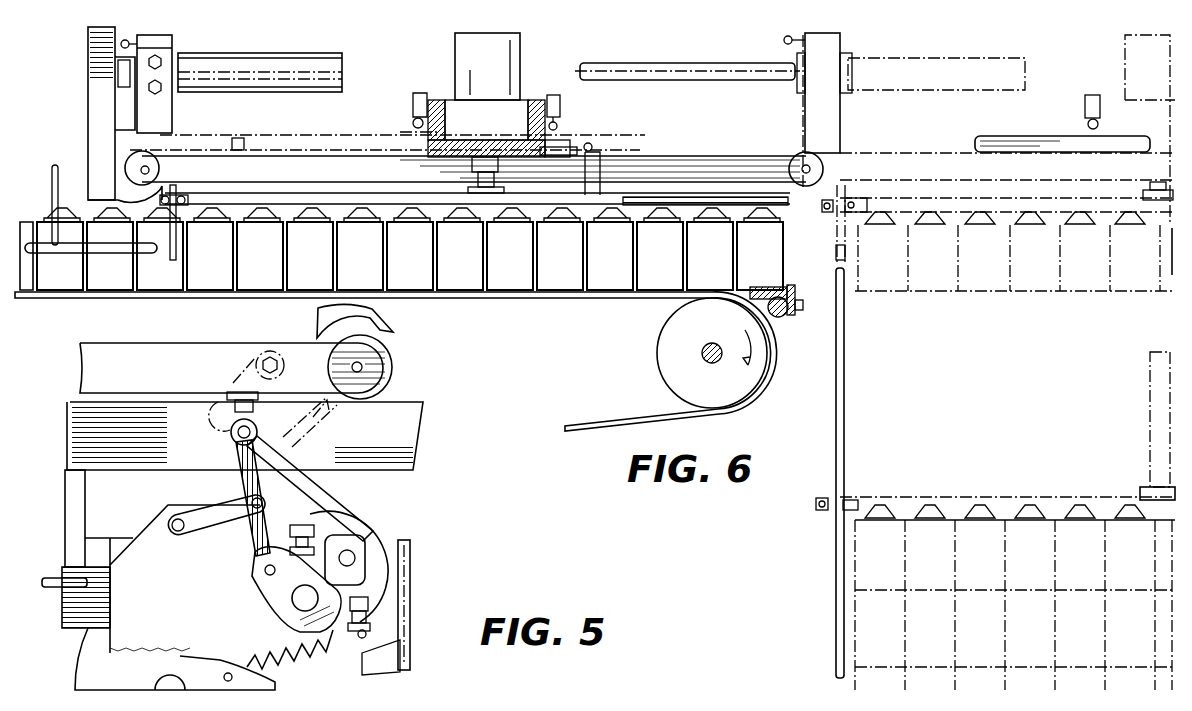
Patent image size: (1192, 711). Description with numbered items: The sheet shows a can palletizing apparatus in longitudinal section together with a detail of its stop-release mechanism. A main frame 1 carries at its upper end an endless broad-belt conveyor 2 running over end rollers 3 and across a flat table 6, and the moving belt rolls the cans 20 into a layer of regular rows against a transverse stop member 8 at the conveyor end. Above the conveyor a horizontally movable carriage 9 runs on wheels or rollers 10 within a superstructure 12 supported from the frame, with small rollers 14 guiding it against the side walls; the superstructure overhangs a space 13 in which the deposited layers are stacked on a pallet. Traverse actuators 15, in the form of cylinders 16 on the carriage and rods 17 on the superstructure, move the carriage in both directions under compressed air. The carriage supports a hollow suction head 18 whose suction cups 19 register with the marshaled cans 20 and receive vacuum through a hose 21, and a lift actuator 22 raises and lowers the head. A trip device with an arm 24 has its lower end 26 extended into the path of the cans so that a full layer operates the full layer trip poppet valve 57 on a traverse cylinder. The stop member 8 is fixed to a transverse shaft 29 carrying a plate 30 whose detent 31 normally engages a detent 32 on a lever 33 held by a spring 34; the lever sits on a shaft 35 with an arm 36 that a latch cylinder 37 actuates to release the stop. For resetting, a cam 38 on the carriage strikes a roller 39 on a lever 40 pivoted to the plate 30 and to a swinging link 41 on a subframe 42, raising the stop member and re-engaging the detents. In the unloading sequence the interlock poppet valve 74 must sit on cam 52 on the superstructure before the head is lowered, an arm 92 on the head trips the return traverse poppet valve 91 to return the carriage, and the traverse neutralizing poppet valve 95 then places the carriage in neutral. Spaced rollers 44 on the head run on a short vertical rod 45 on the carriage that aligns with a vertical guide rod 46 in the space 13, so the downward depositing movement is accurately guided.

In FIG. 5, the main frame 1 is at (76, 500).
In FIG. 6, the endless broad-belt conveyor 2 is at (640, 416).
In FIG. 5, the endless broad-belt conveyor 2 is at (50, 578).
In FIG. 6, the end rollers 3 is at (675, 327).
In FIG. 5, the end rollers 3 is at (93, 662).
In FIG. 5, the flat table 6 is at (62, 608).
In FIG. 6, the transverse stop member 8 is at (795, 312).
In FIG. 5, the transverse stop member 8 is at (411, 573).
In FIG. 6, the horizontally movable carriage 9 is at (360, 162).
In FIG. 5, the horizontally movable carriage 9 is at (170, 360).
In FIG. 6, the wheels or rollers 10 is at (135, 162).
In FIG. 5, the wheels or rollers 10 is at (386, 362).
In FIG. 6, the superstructure 12 is at (98, 100).
In FIG. 5, the superstructure 12 is at (95, 425).
In FIG. 6, the space 13 is at (1032, 409).
In FIG. 5, the small rollers 14 is at (230, 395).
In FIG. 6, the traverse actuators 15 is at (300, 58).
In FIG. 6, the cylinders 16 is at (260, 80).
In FIG. 6, the rods 17 is at (655, 75).
In FIG. 6, the hollow suction head 18 is at (686, 197).
In FIG. 6, the suction cups 19 is at (625, 218).
In FIG. 6, the cans 20 is at (512, 270).
In FIG. 6, the hose 21 is at (235, 147).
In FIG. 6, the actuator 22 is at (487, 48).
In FIG. 6, the arm 24 is at (52, 183).
In FIG. 6, the lower end 26 is at (103, 253).
In FIG. 6, the transverse shaft 29 is at (778, 318).
In FIG. 5, the transverse shaft 29 is at (298, 600).
In FIG. 5, the plate 30 is at (255, 587).
In FIG. 5, the detent 31 is at (366, 618).
In FIG. 5, the detent 32 is at (368, 601).
In FIG. 5, the lever 33 is at (366, 632).
In FIG. 5, the spring 34 is at (316, 652).
In FIG. 5, the shaft 35 is at (356, 556).
In FIG. 5, the arm 36 is at (300, 485).
In FIG. 5, the latch cylinder 37 is at (385, 325).
In FIG. 5, the resetting cam 38 is at (263, 355).
In FIG. 5, the roller 39 is at (231, 433).
In FIG. 5, the lever 40 is at (240, 540).
In FIG. 5, the swinging link 41 is at (210, 517).
In FIG. 5, the subframe 42 is at (196, 647).
In FIG. 6, the spaced rollers 44 is at (160, 188).
In FIG. 6, the short vertical rod 45 is at (176, 252).
In FIG. 6, the vertical guide rod 46 is at (845, 360).
In FIG. 6, the cam 52 is at (407, 127).
In FIG. 6, the full layer trip poppet valve 57 is at (162, 40).
In FIG. 6, the unloading position press button interlock poppet valve 74 is at (418, 93).
In FIG. 6, the return traverse poppet valve 91 is at (558, 145).
In FIG. 6, the arm 92 is at (600, 168).
In FIG. 6, the traverse neutralizing poppet valve 95 is at (553, 95).